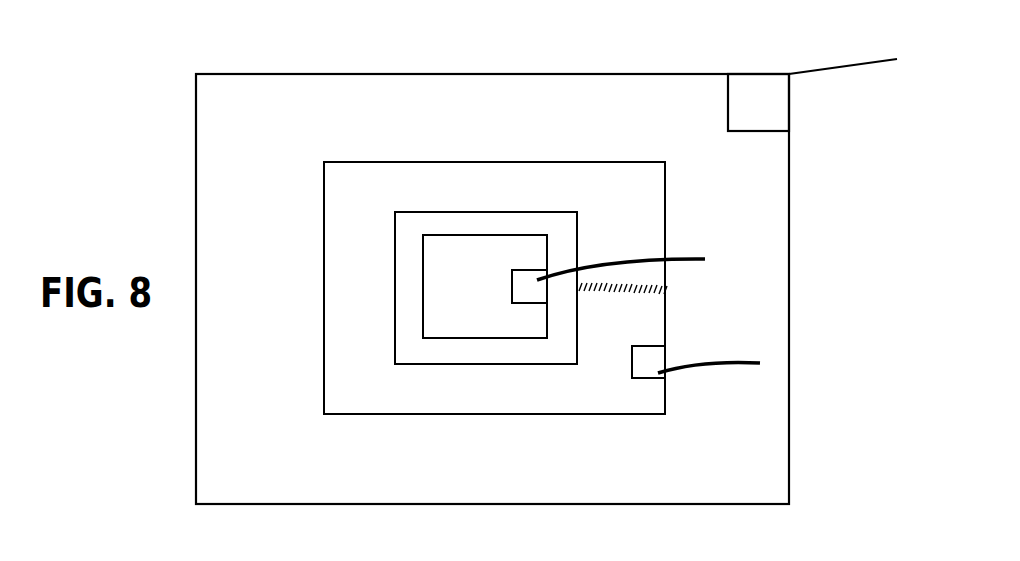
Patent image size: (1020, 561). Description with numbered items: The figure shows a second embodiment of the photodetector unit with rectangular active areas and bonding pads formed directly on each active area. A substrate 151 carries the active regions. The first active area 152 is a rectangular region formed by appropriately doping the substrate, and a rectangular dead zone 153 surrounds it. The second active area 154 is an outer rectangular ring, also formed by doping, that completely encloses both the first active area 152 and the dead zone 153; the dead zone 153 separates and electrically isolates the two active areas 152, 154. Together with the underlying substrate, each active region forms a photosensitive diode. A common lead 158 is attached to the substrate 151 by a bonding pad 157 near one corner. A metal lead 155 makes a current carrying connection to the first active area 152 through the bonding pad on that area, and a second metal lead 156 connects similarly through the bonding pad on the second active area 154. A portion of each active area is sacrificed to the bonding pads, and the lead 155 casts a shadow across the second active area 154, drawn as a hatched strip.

The substrate 151 is at (483, 73).
The first active area 152 is at (441, 233).
The dead zone 153 is at (556, 222).
The second active area 154 is at (485, 161).
The metal lead 155 is at (683, 258).
The second metal lead 156 is at (720, 363).
The bonding pad 157 is at (780, 107).
The common lead 158 is at (847, 66).